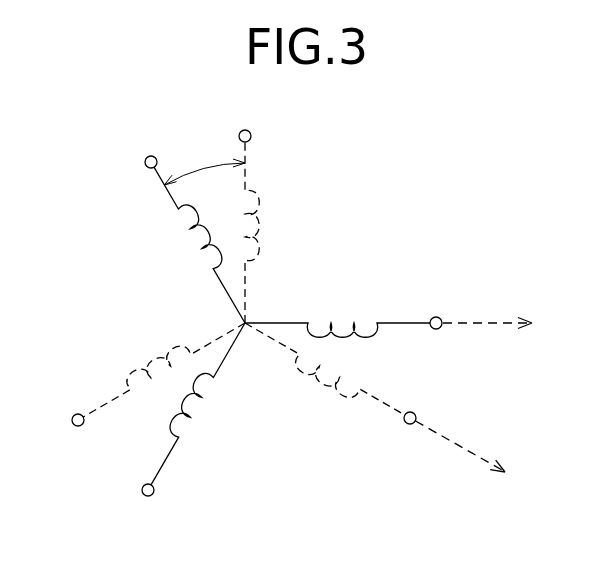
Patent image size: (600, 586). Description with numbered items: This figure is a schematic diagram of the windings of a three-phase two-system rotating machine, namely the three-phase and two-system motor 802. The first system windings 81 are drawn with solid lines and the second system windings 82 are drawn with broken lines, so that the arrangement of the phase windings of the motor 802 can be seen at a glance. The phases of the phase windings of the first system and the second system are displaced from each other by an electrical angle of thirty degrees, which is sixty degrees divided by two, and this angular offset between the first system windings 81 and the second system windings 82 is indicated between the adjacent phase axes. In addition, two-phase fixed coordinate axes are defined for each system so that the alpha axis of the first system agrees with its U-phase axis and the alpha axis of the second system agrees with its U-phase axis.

The first system windings 81 is at (203, 242).
The second system windings 82 is at (263, 232).
The three-phase and two-system motor 802 is at (428, 183).